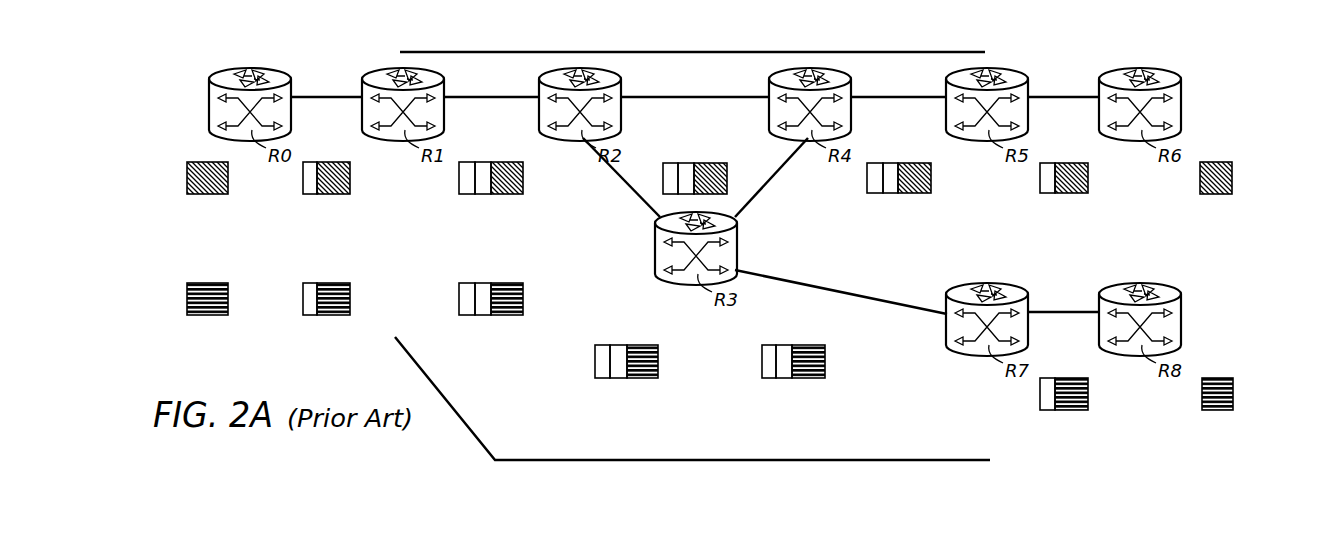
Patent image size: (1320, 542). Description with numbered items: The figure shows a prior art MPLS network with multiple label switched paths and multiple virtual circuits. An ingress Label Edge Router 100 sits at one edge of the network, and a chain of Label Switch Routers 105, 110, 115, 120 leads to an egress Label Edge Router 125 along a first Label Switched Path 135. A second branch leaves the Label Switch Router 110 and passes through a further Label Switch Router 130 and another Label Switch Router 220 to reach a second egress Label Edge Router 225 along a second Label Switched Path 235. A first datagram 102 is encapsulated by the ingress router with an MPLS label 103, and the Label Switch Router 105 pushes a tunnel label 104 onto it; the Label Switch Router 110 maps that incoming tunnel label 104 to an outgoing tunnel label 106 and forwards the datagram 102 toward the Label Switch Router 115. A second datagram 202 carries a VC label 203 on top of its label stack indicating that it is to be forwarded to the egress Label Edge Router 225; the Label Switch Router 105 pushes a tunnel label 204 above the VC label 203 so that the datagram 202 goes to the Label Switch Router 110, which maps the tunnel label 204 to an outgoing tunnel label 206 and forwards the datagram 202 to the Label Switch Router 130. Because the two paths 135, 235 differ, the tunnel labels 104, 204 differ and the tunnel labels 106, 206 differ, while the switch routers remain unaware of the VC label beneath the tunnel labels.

The Label Edge Router 100 is at (291, 108).
The Label Switch Router 105 is at (444, 108).
The Label Switch Router 110 is at (621, 108).
The Label Switch Router 115 is at (851, 108).
The Label Switch Router 120 is at (1028, 108).
The Label Edge Router 125 is at (1181, 108).
The Label Switch Router 130 is at (737, 241).
The Label Switch Router 220 is at (1028, 323).
The egress Label Edge Router 225 is at (1181, 323).
The Label Switched Path 135 is at (848, 52).
The Label Switched Path 235 is at (848, 460).
The datagram 102 is at (205, 194).
The MPLS label 103 is at (313, 194).
The tunnel label 104 is at (465, 194).
The tunnel label 106 is at (670, 163).
The datagram 202 is at (208, 315).
The VC label 203 is at (313, 315).
The tunnel label 204 is at (465, 315).
The tunnel label 206 is at (602, 378).